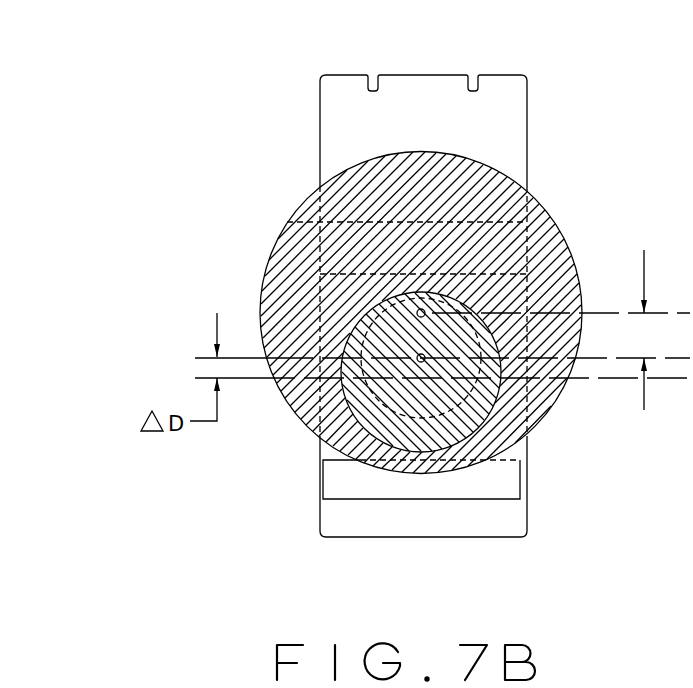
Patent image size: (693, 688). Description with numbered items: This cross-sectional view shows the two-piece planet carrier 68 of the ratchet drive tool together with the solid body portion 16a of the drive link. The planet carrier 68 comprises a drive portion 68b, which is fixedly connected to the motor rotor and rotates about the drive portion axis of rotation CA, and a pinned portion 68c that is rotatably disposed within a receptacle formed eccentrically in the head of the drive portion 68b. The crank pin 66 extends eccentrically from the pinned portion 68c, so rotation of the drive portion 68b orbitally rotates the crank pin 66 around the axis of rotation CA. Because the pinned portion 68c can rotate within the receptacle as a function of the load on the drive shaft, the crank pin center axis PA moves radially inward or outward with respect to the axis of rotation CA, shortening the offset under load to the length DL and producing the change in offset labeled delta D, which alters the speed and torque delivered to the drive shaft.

The planet carrier 68 is at (306, 199).
The drive portion 68b is at (547, 251).
The pinned portion 68c is at (436, 440).
The solid body portion 16a is at (290, 222).
The crank pin 66 is at (367, 467).
The drive portion axis of rotation CA is at (418, 308).
The crank pin center axis PA is at (421, 363).
The D load offset length DL is at (644, 330).